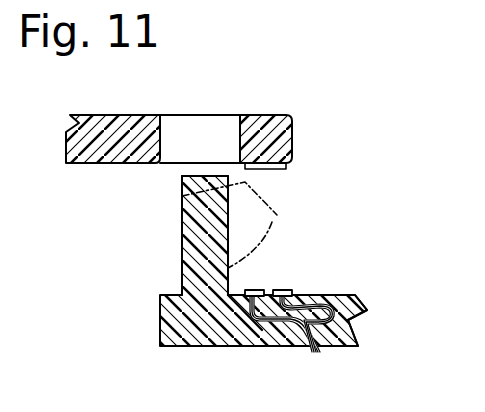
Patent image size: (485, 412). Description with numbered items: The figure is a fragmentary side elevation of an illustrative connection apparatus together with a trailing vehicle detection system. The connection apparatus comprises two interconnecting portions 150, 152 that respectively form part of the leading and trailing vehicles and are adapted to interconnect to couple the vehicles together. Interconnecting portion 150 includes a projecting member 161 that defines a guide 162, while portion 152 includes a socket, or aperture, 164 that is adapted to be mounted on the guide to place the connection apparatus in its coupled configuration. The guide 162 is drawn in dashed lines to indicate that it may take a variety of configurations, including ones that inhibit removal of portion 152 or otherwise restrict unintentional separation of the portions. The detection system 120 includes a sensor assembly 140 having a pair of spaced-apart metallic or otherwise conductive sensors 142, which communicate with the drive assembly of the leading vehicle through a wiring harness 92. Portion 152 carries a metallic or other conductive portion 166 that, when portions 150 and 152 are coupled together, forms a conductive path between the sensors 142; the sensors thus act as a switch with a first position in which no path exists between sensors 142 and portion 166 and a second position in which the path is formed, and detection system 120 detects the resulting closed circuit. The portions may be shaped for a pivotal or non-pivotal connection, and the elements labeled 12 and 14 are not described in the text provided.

The circuit board 12 is at (350, 280).
The housing cover 14 is at (118, 103).
The wiring harness 92 is at (318, 350).
The detection system 120 is at (205, 315).
The sensor assembly 140 is at (242, 315).
The conductive sensors 142 is at (282, 290).
The interconnecting portion 150 is at (166, 278).
The interconnecting portion 152 is at (271, 97).
The projecting member 161 is at (174, 240).
The guide 162 is at (180, 212).
The socket 164 is at (163, 132).
The conductive portion 166 is at (278, 170).